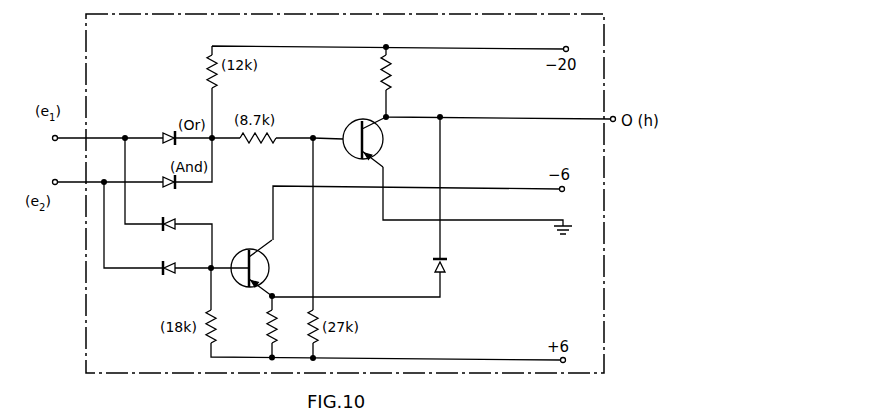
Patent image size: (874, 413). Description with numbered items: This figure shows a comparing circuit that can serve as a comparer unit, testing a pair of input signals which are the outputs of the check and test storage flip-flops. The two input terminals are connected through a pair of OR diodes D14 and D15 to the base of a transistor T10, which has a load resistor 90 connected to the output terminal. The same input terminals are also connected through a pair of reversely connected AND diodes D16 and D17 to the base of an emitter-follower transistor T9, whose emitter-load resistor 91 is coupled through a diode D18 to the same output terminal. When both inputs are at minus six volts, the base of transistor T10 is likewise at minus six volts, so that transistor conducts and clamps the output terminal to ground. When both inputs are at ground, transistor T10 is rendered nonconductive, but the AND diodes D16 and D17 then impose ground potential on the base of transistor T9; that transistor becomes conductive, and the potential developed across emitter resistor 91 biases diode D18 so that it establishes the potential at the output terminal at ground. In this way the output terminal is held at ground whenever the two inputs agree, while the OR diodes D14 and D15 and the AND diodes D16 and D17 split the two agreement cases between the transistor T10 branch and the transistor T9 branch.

The OR diode D14 is at (173, 128).
The OR diode D15 is at (173, 174).
The AND diode D16 is at (166, 220).
The AND diode D17 is at (163, 263).
The diode D18 is at (449, 262).
The emitter-follower transistor T9 is at (262, 249).
The transistor T10 is at (350, 125).
The load resistor 90 is at (391, 70).
The emitter-load resistor 91 is at (267, 315).